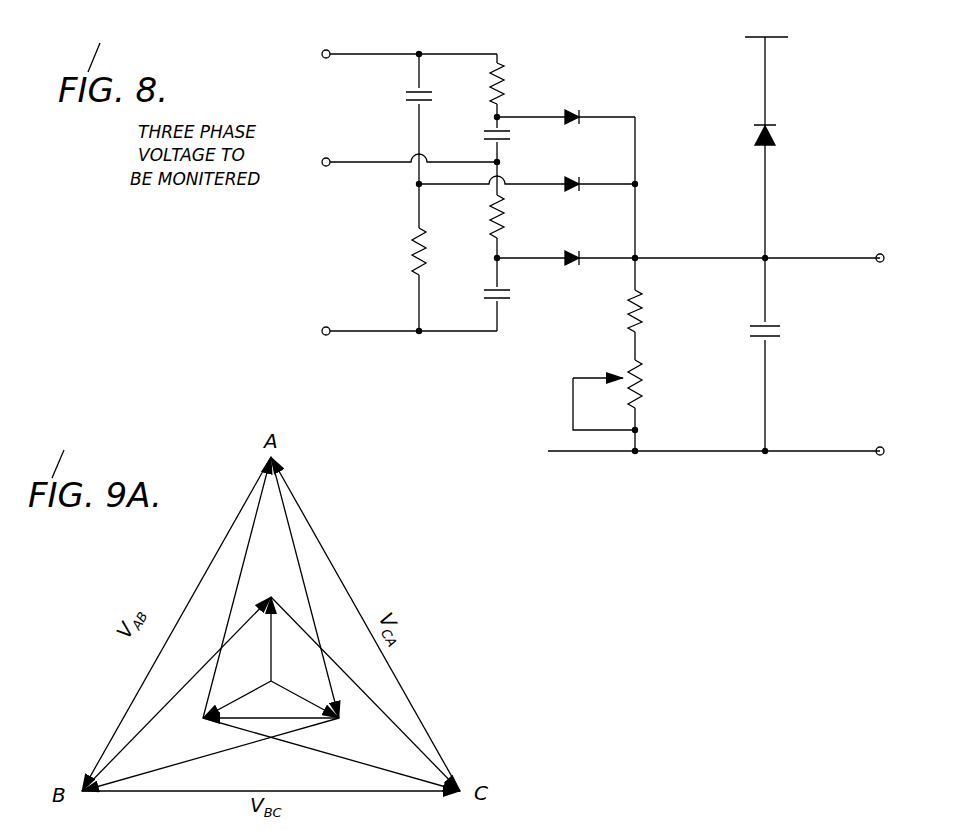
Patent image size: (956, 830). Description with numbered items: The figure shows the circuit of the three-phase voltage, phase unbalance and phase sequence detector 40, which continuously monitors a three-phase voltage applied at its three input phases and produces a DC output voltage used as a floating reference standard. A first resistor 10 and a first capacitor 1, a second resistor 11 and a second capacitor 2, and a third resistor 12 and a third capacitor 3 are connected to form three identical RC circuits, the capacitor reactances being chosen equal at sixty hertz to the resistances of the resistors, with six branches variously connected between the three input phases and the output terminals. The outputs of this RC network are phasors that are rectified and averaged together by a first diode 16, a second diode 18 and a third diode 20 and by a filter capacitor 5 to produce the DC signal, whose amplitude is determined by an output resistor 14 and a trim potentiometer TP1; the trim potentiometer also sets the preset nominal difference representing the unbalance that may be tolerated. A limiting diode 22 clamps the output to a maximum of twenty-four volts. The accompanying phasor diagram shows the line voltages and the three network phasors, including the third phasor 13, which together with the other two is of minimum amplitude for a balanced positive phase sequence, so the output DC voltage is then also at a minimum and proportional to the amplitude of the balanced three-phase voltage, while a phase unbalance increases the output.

In FIG. 8, the three-phase voltage, phase unbalance and phase sequence detector 40 is at (282, 279).
In FIG. 8, the capacitor C1 1 is at (401, 141).
In FIG. 8, the capacitor C2 2 is at (513, 139).
In FIG. 8, the capacitor C3 3 is at (510, 294).
In FIG. 8, the capacitor C5 5 is at (781, 354).
In FIG. 8, the resistor R10 10 is at (399, 279).
In FIG. 8, the resistor R11 11 is at (516, 85).
In FIG. 9A, the resistor R11 11 is at (272, 627).
In FIG. 8, the resistor R12 12 is at (516, 210).
In FIG. 9A, the resistor R12 12 is at (226, 710).
In FIG. 9A, the phasor V13 13 is at (321, 710).
In FIG. 8, the resistor R14 14 is at (656, 311).
In FIG. 8, the diode D16 16 is at (587, 172).
In FIG. 8, the diode D18 18 is at (566, 103).
In FIG. 8, the diode D20 20 is at (688, 243).
In FIG. 8, the diode 22 is at (781, 147).
In FIG. 8, the trim potentiometer TP1 is at (630, 395).